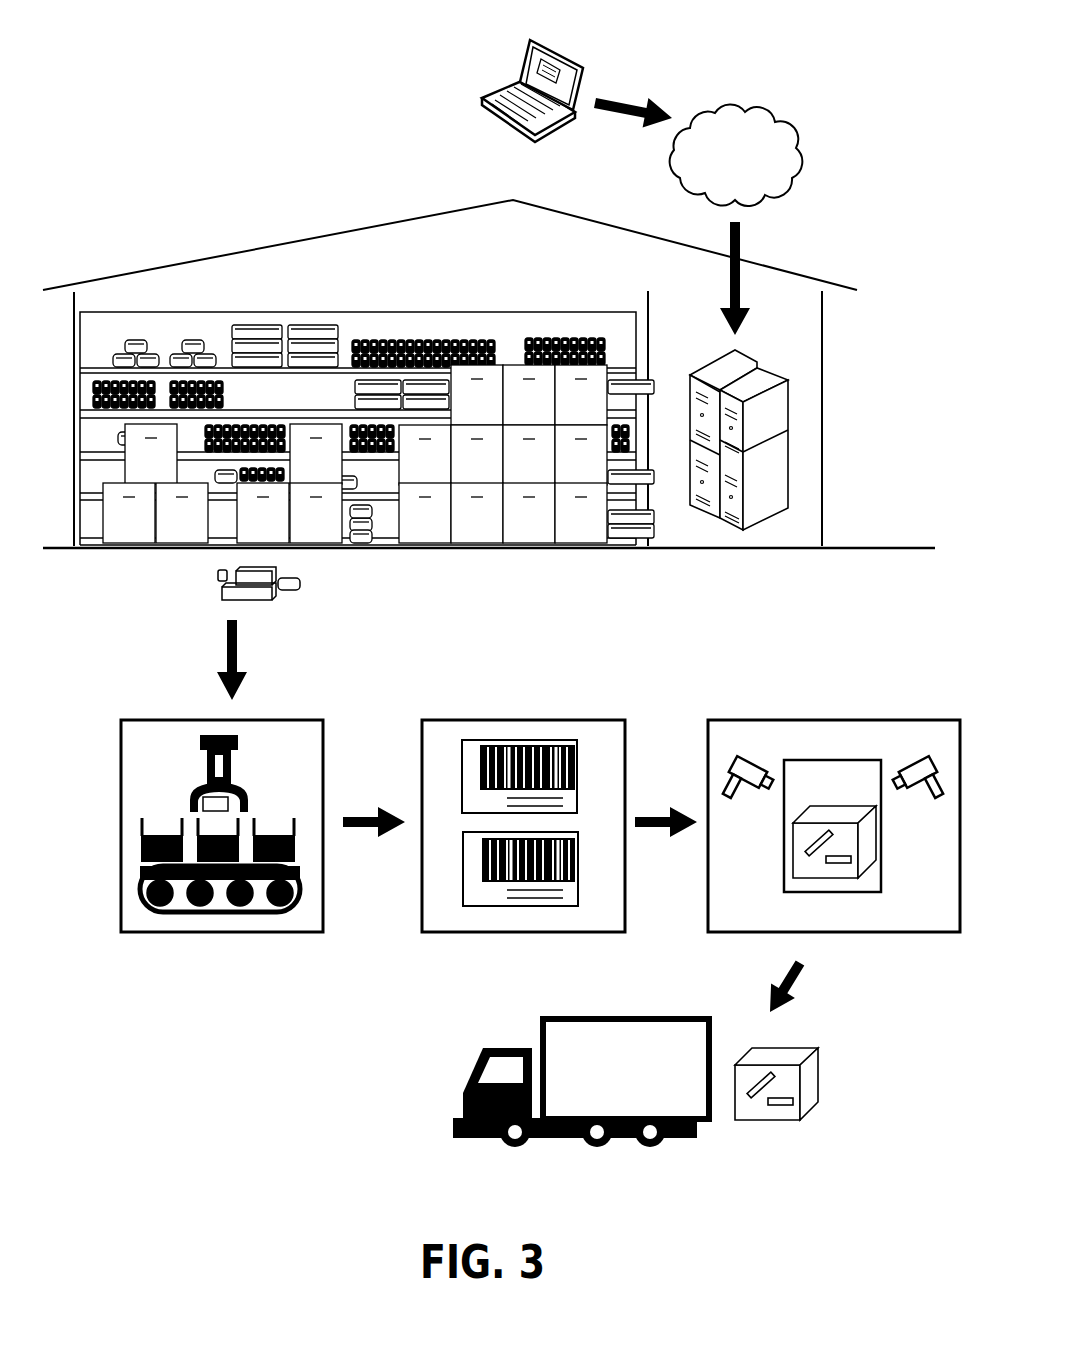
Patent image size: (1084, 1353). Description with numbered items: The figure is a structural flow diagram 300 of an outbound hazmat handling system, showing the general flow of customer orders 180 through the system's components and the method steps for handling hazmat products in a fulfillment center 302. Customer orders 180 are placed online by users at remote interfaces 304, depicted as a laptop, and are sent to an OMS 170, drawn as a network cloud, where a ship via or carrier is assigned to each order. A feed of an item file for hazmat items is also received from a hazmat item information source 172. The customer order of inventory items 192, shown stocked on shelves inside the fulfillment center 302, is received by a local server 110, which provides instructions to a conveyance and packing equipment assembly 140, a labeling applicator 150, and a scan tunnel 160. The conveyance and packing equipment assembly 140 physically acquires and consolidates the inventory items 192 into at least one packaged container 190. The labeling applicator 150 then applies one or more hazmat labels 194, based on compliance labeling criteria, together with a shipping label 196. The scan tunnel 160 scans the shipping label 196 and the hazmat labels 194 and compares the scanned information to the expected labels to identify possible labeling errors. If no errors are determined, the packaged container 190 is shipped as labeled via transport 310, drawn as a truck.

The structural flow diagram 300 is at (178, 150).
The fulfillment center 302 is at (393, 223).
The customer orders 180 is at (535, 63).
The remote interfaces 304 is at (565, 62).
The OMS 170 is at (785, 115).
The hazmat item information source 172 is at (797, 152).
The local server 110 is at (784, 400).
The inventory items 192 is at (300, 583).
The conveyance and packing equipment assembly 140 is at (278, 720).
The labeling applicator 150 is at (533, 720).
The hazmat labels 194 is at (462, 800).
The shipping label 196 is at (462, 892).
The scan tunnel 160 is at (868, 720).
The packaged container 190 is at (213, 912).
The transport 310 is at (645, 1017).